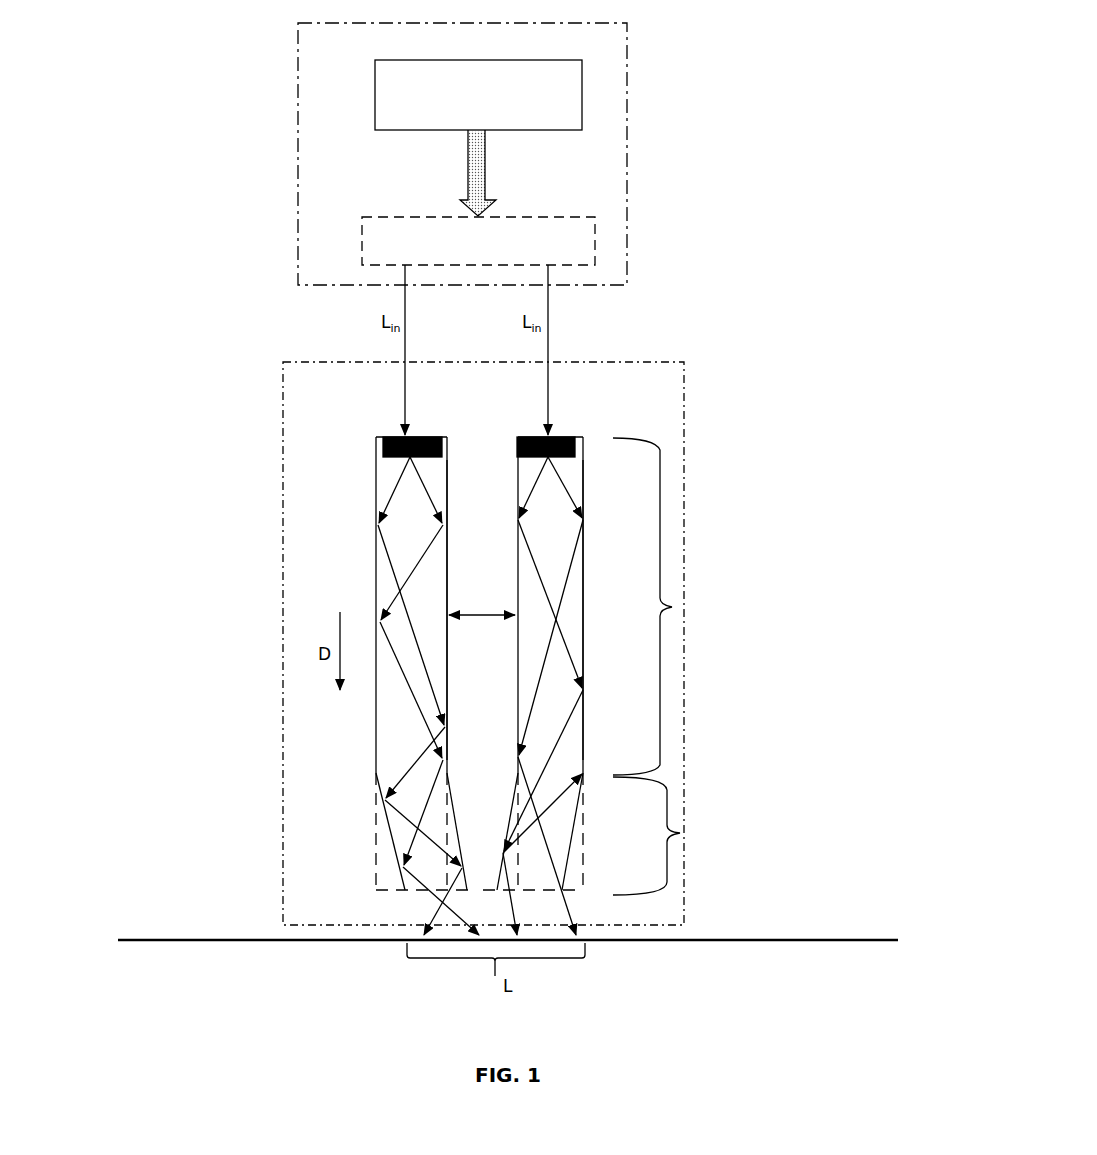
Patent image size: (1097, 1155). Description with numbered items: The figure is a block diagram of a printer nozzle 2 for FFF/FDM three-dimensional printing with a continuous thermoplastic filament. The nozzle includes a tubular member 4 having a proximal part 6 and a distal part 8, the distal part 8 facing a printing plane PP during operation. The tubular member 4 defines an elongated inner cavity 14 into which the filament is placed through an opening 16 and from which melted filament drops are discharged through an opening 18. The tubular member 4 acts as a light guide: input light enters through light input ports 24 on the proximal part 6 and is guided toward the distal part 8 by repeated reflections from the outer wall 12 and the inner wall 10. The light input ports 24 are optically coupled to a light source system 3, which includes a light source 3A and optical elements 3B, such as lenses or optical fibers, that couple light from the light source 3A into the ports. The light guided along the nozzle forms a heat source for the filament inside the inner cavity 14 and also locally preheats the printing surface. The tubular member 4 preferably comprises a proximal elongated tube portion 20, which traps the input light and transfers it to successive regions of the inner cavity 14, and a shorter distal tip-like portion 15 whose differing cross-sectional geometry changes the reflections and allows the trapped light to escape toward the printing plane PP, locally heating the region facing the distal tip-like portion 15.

The printer nozzle 2 is at (686, 428).
The light source system 3 is at (628, 155).
The light source 3A is at (478, 95).
The optical elements 3B is at (478, 241).
The tubular member 4 is at (360, 570).
The proximal part 6 is at (369, 427).
The distal part 8 is at (595, 880).
The inner wall 10 is at (447, 575).
The outer wall 12 is at (588, 580).
The inner cavity 14 is at (487, 655).
The distal tip-like portion 15 is at (680, 833).
The opening 16 is at (480, 437).
The opening 18 is at (483, 890).
The elongated tube portion 20 is at (672, 607).
The light input ports 24 is at (440, 437).
The printing plane PP is at (470, 927).